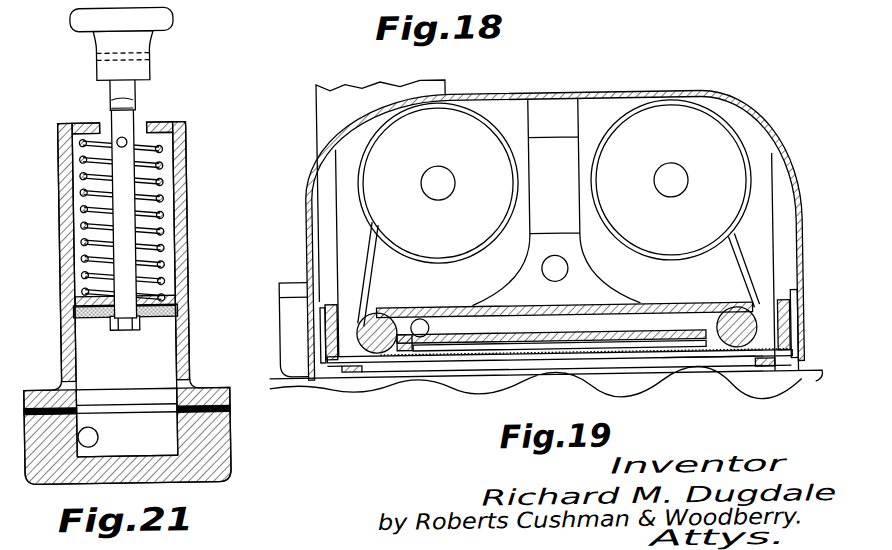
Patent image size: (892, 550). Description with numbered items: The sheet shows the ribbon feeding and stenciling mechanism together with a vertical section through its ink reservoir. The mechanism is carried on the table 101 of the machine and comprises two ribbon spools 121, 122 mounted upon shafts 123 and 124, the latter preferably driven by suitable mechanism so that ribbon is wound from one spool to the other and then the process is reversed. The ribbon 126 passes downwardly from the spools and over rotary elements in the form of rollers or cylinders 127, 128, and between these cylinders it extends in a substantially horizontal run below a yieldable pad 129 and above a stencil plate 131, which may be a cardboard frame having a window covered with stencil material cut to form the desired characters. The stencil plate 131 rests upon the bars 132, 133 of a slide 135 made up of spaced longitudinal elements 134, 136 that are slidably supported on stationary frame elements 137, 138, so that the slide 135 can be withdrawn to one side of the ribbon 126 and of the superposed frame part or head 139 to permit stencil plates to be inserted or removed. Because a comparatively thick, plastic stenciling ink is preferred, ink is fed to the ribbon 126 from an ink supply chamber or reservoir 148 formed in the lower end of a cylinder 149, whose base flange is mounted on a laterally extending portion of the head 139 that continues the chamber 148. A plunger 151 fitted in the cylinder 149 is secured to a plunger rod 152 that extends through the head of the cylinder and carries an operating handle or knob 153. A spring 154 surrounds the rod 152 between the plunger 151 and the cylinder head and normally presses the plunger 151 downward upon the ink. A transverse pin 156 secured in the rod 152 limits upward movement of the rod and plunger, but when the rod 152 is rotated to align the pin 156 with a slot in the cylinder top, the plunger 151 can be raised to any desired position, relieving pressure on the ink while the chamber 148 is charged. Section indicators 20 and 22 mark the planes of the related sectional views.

In FIG. 19, the ribbon spool 121 is at (454, 118).
In FIG. 19, the ribbon spool 122 is at (690, 117).
In FIG. 19, the shaft 123 is at (450, 161).
In FIG. 19, the shaft 124 is at (682, 159).
In FIG. 19, the ribbon 126 is at (373, 276).
In FIG. 19, the cylinder 127 is at (374, 352).
In FIG. 19, the cylinder 128 is at (696, 363).
In FIG. 19, the yieldable pad 129 is at (449, 370).
In FIG. 19, the stencil plate 131 is at (574, 364).
In FIG. 19, the bar 132 is at (755, 366).
In FIG. 19, the bar 133 is at (350, 364).
In FIG. 19, the longitudinal element 134 is at (343, 362).
In FIG. 19, the slide 135 is at (785, 366).
In FIG. 19, the longitudinal element 136 is at (796, 305).
In FIG. 19, the stationary frame element 137 is at (324, 316).
In FIG. 19, the stationary frame element 138 is at (761, 307).
In FIG. 19, the head 139 is at (641, 310).
In FIG. 19, the table 101 is at (634, 363).
In FIG. 19, the section line 20 is at (272, 326).
In FIG. 21, the section line 22 is at (80, 100).
In FIG. 21, the ink supply chamber 148 is at (127, 426).
In FIG. 21, the cylinder 149 is at (189, 189).
In FIG. 21, the plunger 151 is at (101, 317).
In FIG. 21, the plunger rod 152 is at (139, 85).
In FIG. 21, the operating knob 153 is at (177, 16).
In FIG. 21, the spring 154 is at (164, 159).
In FIG. 21, the transverse pin 156 is at (121, 133).